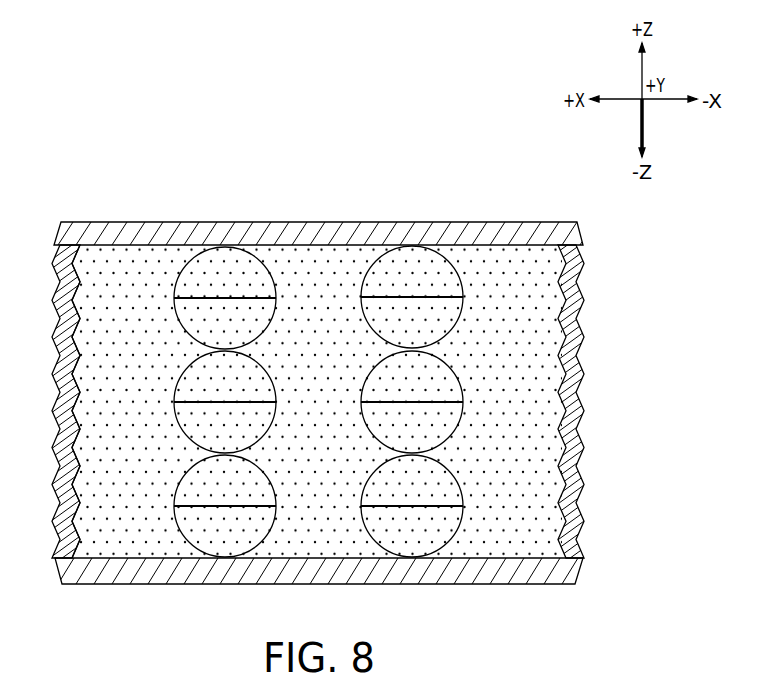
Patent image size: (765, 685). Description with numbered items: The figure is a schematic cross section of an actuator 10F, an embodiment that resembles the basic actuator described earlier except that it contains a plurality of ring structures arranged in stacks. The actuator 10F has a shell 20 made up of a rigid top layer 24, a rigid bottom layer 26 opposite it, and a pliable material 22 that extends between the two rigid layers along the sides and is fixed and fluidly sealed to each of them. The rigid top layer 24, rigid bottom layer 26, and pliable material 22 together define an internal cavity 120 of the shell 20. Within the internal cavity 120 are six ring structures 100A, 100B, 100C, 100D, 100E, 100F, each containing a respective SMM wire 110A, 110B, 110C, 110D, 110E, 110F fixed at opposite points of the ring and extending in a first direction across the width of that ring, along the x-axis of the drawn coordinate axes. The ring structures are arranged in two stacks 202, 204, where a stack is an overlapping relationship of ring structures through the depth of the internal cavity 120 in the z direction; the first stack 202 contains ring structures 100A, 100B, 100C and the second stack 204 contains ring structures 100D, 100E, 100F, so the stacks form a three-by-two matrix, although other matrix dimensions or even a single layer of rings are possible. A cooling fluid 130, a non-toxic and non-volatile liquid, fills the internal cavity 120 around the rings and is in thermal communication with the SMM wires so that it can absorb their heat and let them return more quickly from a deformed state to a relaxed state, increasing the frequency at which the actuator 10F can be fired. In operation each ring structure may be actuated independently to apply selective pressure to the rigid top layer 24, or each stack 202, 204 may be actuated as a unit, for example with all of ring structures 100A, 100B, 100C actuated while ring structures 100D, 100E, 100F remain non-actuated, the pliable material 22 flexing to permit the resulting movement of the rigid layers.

The actuator 10F is at (87, 170).
The shell 20 is at (172, 207).
The pliable material 22 is at (55, 460).
The rigid top layer 24 is at (384, 236).
The rigid bottom layer 26 is at (318, 609).
The internal cavity 120 is at (542, 390).
The cooling fluid 130 is at (88, 402).
The stack 202 is at (212, 570).
The stack 204 is at (422, 572).
The ring structure 100A is at (178, 320).
The ring structure 100B is at (178, 424).
The ring structure 100C is at (178, 523).
The ring structure 100D is at (461, 320).
The ring structure 100E is at (461, 425).
The ring structure 100F is at (461, 522).
The SMM wire 110A is at (258, 299).
The SMM wire 110B is at (258, 403).
The SMM wire 110C is at (258, 507).
The SMM wire 110D is at (383, 297).
The SMM wire 110E is at (383, 402).
The SMM wire 110F is at (383, 506).